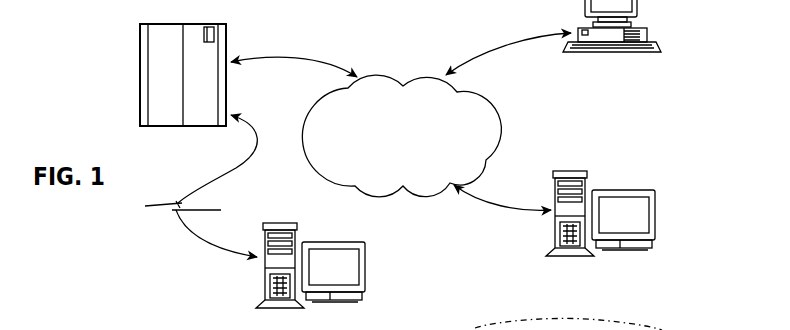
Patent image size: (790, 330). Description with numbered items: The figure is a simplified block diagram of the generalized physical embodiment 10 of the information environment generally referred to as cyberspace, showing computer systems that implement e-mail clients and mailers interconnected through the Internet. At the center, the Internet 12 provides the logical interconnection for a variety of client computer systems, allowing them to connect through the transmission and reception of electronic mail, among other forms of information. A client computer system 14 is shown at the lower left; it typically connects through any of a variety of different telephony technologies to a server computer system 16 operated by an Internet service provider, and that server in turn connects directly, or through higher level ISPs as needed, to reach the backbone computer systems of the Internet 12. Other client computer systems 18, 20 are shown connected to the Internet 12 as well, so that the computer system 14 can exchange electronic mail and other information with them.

The generalized physical embodiment 10 is at (174, 240).
The Internet 12 is at (438, 181).
The computer system 14 is at (366, 268).
The server computer system 16 is at (137, 63).
The client computer system 18 is at (665, 215).
The client computer system 20 is at (595, 53).